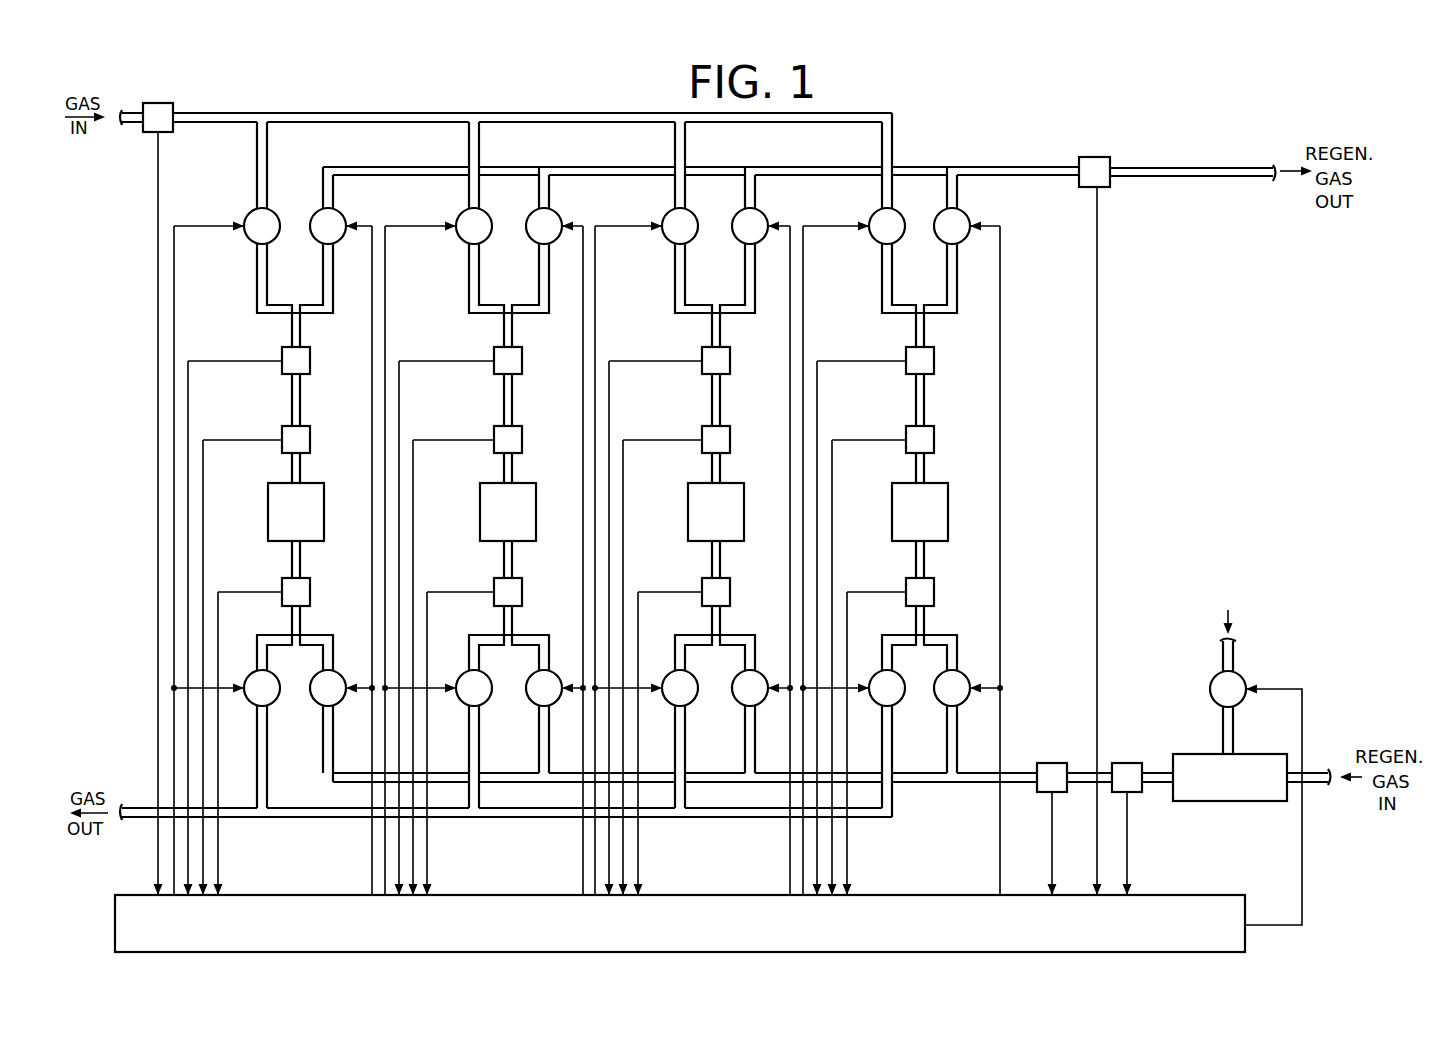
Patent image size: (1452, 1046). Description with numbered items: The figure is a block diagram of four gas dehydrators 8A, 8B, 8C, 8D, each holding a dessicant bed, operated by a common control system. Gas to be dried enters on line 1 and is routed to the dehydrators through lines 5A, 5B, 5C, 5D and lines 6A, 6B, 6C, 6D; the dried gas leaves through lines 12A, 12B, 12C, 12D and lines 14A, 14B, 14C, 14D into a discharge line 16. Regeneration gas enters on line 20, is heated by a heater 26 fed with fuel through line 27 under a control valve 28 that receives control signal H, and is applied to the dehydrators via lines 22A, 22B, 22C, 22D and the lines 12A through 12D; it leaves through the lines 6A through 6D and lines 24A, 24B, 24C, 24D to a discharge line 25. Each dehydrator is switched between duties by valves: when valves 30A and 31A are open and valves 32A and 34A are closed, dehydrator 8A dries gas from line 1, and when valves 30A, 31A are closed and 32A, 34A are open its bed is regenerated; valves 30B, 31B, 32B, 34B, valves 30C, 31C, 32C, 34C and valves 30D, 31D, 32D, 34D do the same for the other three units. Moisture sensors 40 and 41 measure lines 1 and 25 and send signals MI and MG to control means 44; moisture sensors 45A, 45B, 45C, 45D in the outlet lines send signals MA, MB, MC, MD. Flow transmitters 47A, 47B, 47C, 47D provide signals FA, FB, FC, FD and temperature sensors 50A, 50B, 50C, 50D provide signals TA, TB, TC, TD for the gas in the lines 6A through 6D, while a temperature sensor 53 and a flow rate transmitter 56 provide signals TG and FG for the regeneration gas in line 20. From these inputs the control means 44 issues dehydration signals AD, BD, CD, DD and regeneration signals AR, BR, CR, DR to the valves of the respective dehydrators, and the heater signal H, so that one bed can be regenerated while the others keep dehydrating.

The line 1 is at (232, 113).
The line 5A is at (268, 142).
The line 5B is at (481, 143).
The line 5C is at (686, 143).
The line 5D is at (893, 133).
The line 24A is at (334, 198).
The line 24B is at (550, 197).
The line 24C is at (756, 198).
The line 24D is at (958, 196).
The valve 30A is at (250, 241).
The valve 30B is at (462, 241).
The valve 30C is at (668, 241).
The valve 30D is at (875, 241).
The valve 32A is at (319, 244).
The valve 32B is at (535, 244).
The valve 32C is at (741, 244).
The valve 32D is at (943, 244).
The moisture sensor 40 is at (165, 103).
The moisture sensor 41 is at (1105, 130).
The discharge line 25 is at (1170, 169).
The flow transmitter 47A is at (309, 352).
The flow transmitter 47B is at (522, 368).
The flow transmitter 47C is at (730, 368).
The flow transmitter 47D is at (934, 368).
The temperature sensor 50A is at (310, 432).
The temperature sensor 50B is at (523, 436).
The temperature sensor 50C is at (731, 436).
The temperature sensor 50D is at (935, 436).
The line 6A is at (292, 393).
The line 6B is at (504, 393).
The line 6C is at (712, 393).
The line 6D is at (916, 393).
The dehydrator 8A is at (307, 523).
The dehydrator 8B is at (519, 523).
The dehydrator 8C is at (727, 523).
The dehydrator 8D is at (931, 523).
The moisture sensor 45A is at (310, 586).
The moisture sensor 45B is at (522, 586).
The moisture sensor 45C is at (730, 586).
The moisture sensor 45D is at (935, 588).
The line 12A is at (301, 622).
The line 12B is at (513, 622).
The line 12C is at (721, 622).
The line 12D is at (925, 622).
The valve 31A is at (272, 677).
The valve 31B is at (484, 677).
The valve 31C is at (690, 677).
The valve 31D is at (897, 677).
The valve 34A is at (319, 705).
The valve 34B is at (535, 705).
The valve 34C is at (741, 705).
The valve 34D is at (943, 705).
The line 14A is at (268, 758).
The line 14B is at (480, 758).
The line 14C is at (686, 758).
The line 14D is at (893, 758).
The discharge line 16 is at (283, 819).
The line 22A is at (333, 766).
The line 22B is at (549, 766).
The line 22C is at (755, 766).
The line 22D is at (960, 766).
The line 20 is at (1083, 772).
The temperature sensor 53 is at (1043, 763).
The flow rate transmitter 56 is at (1127, 763).
The heater 26 is at (1222, 801).
The line 27 is at (1234, 660).
The control valve 28 is at (1210, 694).
The control means 44 is at (790, 935).
The signal MI is at (158, 203).
The signal MG is at (1099, 308).
The signal TG is at (1052, 838).
The signal FG is at (1128, 838).
The control signal H is at (1270, 925).
The signal AD is at (205, 226).
The signal BD is at (410, 207).
The signal CD is at (620, 207).
The signal DD is at (828, 207).
The signal AR is at (372, 378).
The signal BR is at (583, 333).
The signal CR is at (790, 333).
The signal DR is at (1002, 308).
The signal FA is at (238, 361).
The signal FB is at (450, 361).
The signal FC is at (659, 361).
The signal FD is at (867, 361).
The signal TA is at (238, 440).
The signal TB is at (445, 440).
The signal TC is at (655, 440).
The signal TD is at (863, 440).
The signal MA is at (258, 592).
The signal MB is at (468, 592).
The signal MC is at (678, 592).
The signal MD is at (886, 592).